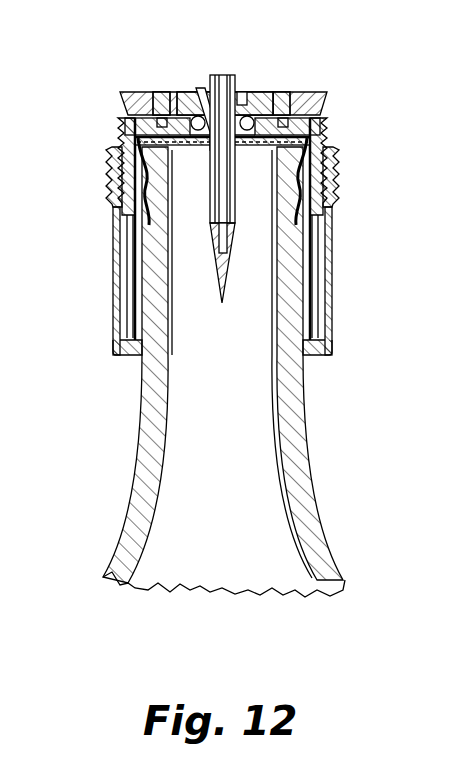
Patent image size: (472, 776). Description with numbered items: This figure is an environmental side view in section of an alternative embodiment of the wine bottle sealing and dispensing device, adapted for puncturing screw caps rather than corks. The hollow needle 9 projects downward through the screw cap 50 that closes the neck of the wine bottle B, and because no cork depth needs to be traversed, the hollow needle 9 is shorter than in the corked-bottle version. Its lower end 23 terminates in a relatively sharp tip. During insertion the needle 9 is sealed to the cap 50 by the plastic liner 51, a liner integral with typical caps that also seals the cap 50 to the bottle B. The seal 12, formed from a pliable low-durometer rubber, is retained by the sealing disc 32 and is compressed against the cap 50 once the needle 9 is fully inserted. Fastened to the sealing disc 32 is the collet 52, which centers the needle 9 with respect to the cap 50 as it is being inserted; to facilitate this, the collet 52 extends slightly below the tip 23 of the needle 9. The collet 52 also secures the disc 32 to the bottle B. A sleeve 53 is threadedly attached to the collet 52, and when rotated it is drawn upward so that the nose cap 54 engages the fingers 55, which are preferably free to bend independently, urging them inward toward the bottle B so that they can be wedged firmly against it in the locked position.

The hollow needle 9 is at (248, 205).
The seal 12 is at (262, 112).
The lower end 23 is at (233, 268).
The sealing disc 32 is at (307, 92).
The screw cap 50 is at (124, 123).
The plastic liner 51 is at (132, 172).
The collet 52 is at (127, 208).
The sleeve 53 is at (112, 257).
The nose cap 54 is at (131, 355).
The fingers 55 is at (137, 320).
The wine bottle B is at (293, 427).